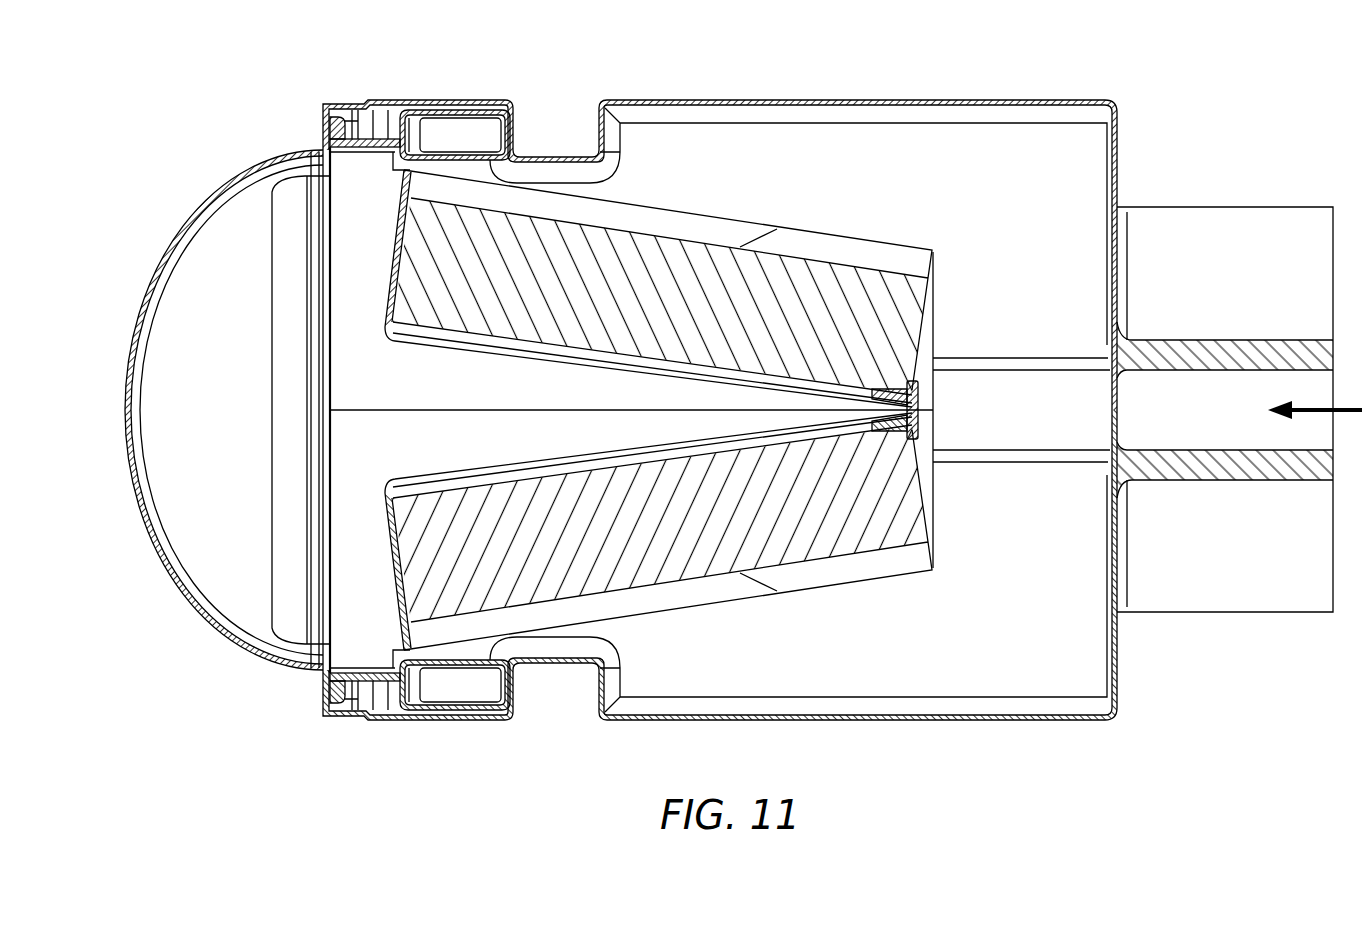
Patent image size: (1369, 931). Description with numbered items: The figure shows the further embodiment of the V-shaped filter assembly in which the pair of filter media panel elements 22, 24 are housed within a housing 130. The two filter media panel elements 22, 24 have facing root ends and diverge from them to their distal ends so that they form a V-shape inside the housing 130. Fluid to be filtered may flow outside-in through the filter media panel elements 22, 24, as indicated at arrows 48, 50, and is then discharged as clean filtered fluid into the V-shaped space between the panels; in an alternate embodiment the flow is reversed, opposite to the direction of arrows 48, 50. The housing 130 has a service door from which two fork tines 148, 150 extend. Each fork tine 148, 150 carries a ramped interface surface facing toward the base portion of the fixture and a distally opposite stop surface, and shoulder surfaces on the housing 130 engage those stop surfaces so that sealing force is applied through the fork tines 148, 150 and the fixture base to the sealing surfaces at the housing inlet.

The filter media panel element 22 is at (717, 253).
The filter media panel element 24 is at (690, 569).
The housing 130 is at (1120, 156).
The fork tine 148 is at (455, 133).
The fork tine 150 is at (455, 690).
The arrow 48 is at (1307, 412).
The arrow 50 is at (1239, 409).